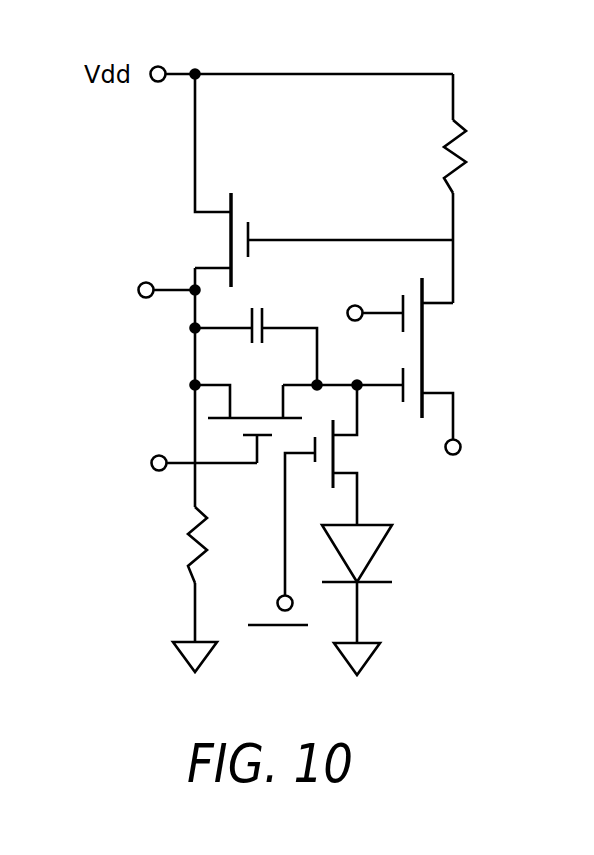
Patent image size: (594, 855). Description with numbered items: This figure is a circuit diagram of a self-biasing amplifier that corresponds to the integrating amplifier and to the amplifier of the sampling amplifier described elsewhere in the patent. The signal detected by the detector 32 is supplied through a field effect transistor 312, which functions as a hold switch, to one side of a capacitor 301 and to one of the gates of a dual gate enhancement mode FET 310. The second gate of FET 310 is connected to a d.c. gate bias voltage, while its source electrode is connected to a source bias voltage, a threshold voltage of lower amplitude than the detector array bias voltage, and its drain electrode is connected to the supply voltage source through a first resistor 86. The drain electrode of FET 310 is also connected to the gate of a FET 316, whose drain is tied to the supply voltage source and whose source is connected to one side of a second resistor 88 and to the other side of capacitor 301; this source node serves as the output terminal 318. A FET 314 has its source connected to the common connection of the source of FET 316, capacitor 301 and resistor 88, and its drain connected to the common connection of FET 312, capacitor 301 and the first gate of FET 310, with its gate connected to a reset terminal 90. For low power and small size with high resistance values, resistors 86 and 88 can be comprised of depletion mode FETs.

The first resistor 86 is at (446, 152).
The FET 316 is at (230, 247).
The output terminal 318 is at (144, 299).
The capacitor 301 is at (268, 318).
The FET 314 is at (252, 412).
The reset terminal 90 is at (158, 455).
The dual gate enhancement mode FET 310 is at (426, 358).
The field effect transistor 312 is at (324, 468).
The second resistor 88 is at (203, 553).
The detector 32 is at (393, 535).